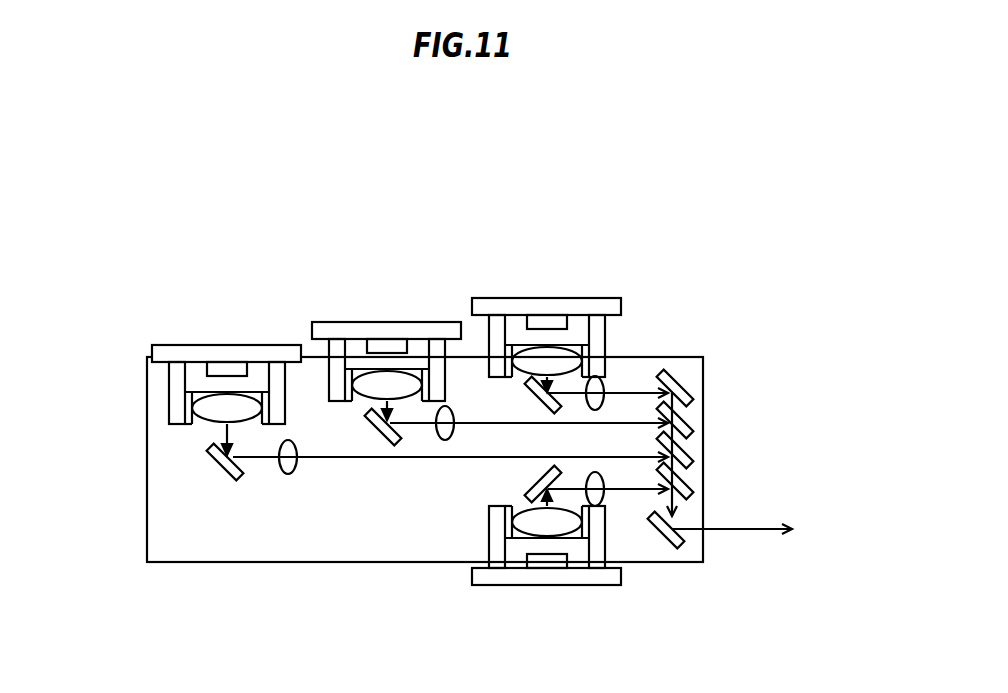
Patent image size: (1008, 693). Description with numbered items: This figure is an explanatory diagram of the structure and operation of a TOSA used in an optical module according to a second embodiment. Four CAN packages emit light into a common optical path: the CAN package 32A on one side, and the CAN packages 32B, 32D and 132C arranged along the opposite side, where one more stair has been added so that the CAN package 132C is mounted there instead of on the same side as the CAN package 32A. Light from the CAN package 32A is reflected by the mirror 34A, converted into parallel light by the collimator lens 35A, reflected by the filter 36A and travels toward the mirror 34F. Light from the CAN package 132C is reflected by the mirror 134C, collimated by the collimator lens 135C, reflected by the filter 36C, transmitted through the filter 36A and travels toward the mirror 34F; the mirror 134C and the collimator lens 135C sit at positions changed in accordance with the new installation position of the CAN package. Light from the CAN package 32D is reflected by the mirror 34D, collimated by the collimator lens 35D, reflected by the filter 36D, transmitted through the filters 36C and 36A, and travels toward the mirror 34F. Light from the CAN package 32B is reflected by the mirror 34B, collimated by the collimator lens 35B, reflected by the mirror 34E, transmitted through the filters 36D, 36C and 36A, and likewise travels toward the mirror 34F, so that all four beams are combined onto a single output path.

The CAN package 132C is at (222, 338).
The CAN package 32D is at (393, 310).
The CAN package 32B is at (542, 292).
The CAN package 32A is at (552, 594).
The mirror 134C is at (211, 454).
The collimator lens 135C is at (288, 470).
The mirror 34D is at (375, 445).
The collimator lens 35D is at (446, 440).
The mirror 34B is at (548, 390).
The collimator lens 35B is at (598, 385).
The mirror 34A is at (530, 500).
The collimator lens 35A is at (597, 505).
The mirror 34E is at (688, 393).
The filter 36D is at (688, 423).
The filter 36C is at (688, 453).
The filter 36A is at (688, 484).
The mirror 34F is at (681, 551).